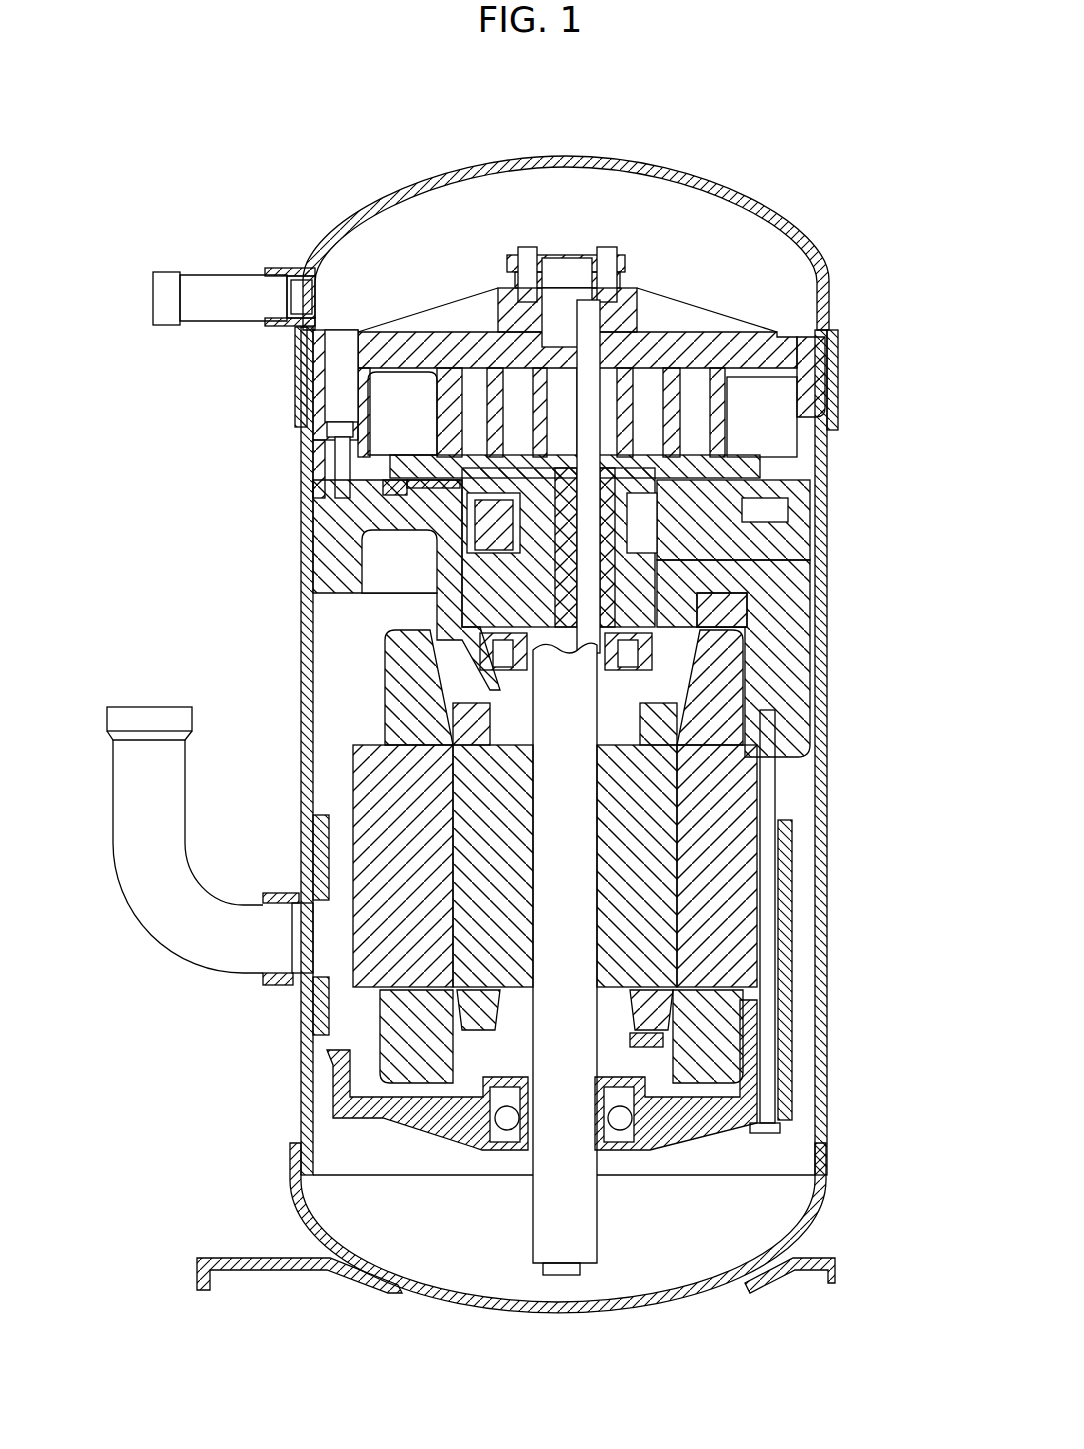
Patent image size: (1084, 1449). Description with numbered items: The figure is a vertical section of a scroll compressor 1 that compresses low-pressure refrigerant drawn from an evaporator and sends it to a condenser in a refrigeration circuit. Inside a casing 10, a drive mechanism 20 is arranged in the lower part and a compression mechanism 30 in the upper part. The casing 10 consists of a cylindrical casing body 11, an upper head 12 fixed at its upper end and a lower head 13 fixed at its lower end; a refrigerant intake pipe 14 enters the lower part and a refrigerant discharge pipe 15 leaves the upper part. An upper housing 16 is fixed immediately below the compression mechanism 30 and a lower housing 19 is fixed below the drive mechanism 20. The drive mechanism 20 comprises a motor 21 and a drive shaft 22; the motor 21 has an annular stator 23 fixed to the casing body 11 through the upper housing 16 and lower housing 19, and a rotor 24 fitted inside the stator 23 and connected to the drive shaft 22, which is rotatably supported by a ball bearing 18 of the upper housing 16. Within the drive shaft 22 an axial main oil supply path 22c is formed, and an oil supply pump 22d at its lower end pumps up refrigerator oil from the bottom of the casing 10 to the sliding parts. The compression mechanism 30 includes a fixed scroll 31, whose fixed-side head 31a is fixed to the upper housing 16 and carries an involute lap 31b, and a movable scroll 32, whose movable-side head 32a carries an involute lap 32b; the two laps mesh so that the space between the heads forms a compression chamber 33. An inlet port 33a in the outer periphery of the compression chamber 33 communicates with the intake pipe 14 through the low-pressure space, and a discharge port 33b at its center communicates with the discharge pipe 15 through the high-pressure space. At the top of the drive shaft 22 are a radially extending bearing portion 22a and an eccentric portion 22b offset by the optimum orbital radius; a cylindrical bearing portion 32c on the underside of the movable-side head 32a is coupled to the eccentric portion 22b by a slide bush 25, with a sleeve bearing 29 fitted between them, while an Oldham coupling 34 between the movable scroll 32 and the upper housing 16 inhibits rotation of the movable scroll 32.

The scroll compressor 1 is at (280, 98).
The casing 10 is at (847, 191).
The casing body 11 is at (820, 730).
The upper head 12 is at (648, 163).
The lower head 13 is at (818, 1244).
The refrigerant intake pipe 14 is at (113, 827).
The refrigerant discharge pipe 15 is at (212, 280).
The upper housing 16 is at (800, 675).
The ball bearing 18 is at (730, 645).
The lower housing 19 is at (340, 1105).
The drive mechanism 20 is at (338, 682).
The motor 21 is at (336, 781).
The drive shaft 22 is at (560, 940).
The bearing portion 22a is at (490, 605).
The eccentric portion 22b is at (740, 597).
The main oil supply path 22c is at (690, 738).
The oil supply pump 22d is at (575, 1276).
The stator 23 is at (400, 985).
The rotor 24 is at (480, 965).
The slide bush 25 is at (465, 550).
The sleeve bearing 29 is at (750, 540).
The compression mechanism 30 is at (814, 452).
The fixed scroll 31 is at (797, 330).
The fixed-side head 31a is at (800, 357).
The spiral lap 31b is at (428, 392).
The movable scroll 32 is at (756, 470).
The movable-side head 32a is at (413, 470).
The spiral lap 32b is at (689, 392).
The bearing portion 32c is at (512, 515).
The compression chamber 33 is at (605, 374).
The inlet port 33a is at (775, 397).
The discharge port 33b is at (568, 312).
The Oldham coupling 34 is at (800, 508).